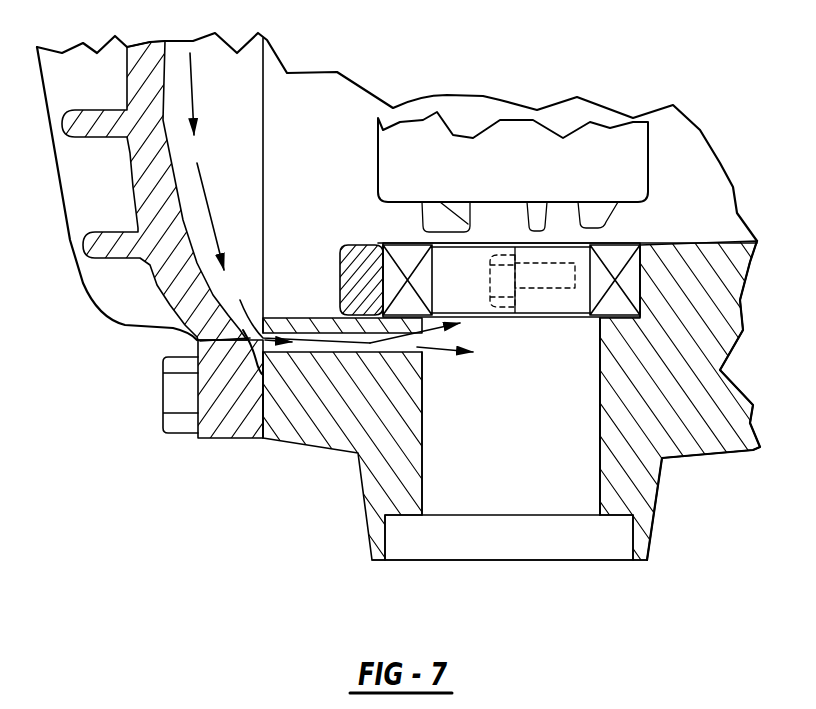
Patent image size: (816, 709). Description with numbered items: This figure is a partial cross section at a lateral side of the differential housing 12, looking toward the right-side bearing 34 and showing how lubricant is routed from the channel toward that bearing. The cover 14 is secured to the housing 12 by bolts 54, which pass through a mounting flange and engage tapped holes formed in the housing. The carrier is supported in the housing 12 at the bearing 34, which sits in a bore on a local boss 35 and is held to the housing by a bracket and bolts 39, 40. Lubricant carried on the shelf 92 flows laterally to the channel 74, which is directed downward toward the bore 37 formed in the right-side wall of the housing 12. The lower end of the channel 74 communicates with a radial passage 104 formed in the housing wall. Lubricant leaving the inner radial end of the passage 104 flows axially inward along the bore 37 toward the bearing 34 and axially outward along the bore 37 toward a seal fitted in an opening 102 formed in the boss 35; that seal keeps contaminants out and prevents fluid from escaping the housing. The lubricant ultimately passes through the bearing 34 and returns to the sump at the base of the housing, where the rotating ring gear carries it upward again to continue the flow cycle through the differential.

The housing 12 is at (713, 445).
The cover 14 is at (232, 423).
The bearing 34 is at (407, 260).
The local boss 35 is at (638, 488).
The bore 37 is at (600, 452).
The bolt 39 is at (552, 280).
The bolt 40 is at (502, 281).
The bolt 54 is at (178, 392).
The channel 74 is at (200, 341).
The shelf 92 is at (190, 210).
The opening 102 is at (630, 538).
The radial passage 104 is at (330, 342).